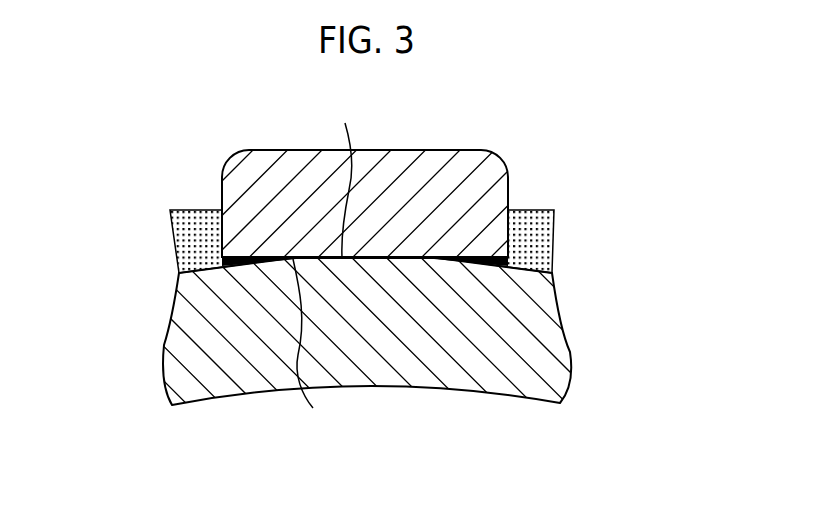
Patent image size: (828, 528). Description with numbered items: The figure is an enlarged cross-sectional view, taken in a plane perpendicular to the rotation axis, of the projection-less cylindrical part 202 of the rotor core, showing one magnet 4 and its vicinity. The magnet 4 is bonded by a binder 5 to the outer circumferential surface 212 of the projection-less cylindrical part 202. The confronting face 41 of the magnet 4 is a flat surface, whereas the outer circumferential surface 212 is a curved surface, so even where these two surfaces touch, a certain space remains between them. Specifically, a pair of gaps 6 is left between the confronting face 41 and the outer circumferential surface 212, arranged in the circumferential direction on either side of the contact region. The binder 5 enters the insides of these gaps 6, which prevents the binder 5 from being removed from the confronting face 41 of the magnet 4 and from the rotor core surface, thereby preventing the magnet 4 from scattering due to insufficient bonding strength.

The magnet 4 is at (397, 167).
The confronting face 41 is at (342, 177).
The binder 5 is at (200, 210).
The gap 6 is at (210, 261).
The projection-less cylindrical part 202 is at (420, 373).
The outer circumferential surface 212 is at (317, 350).